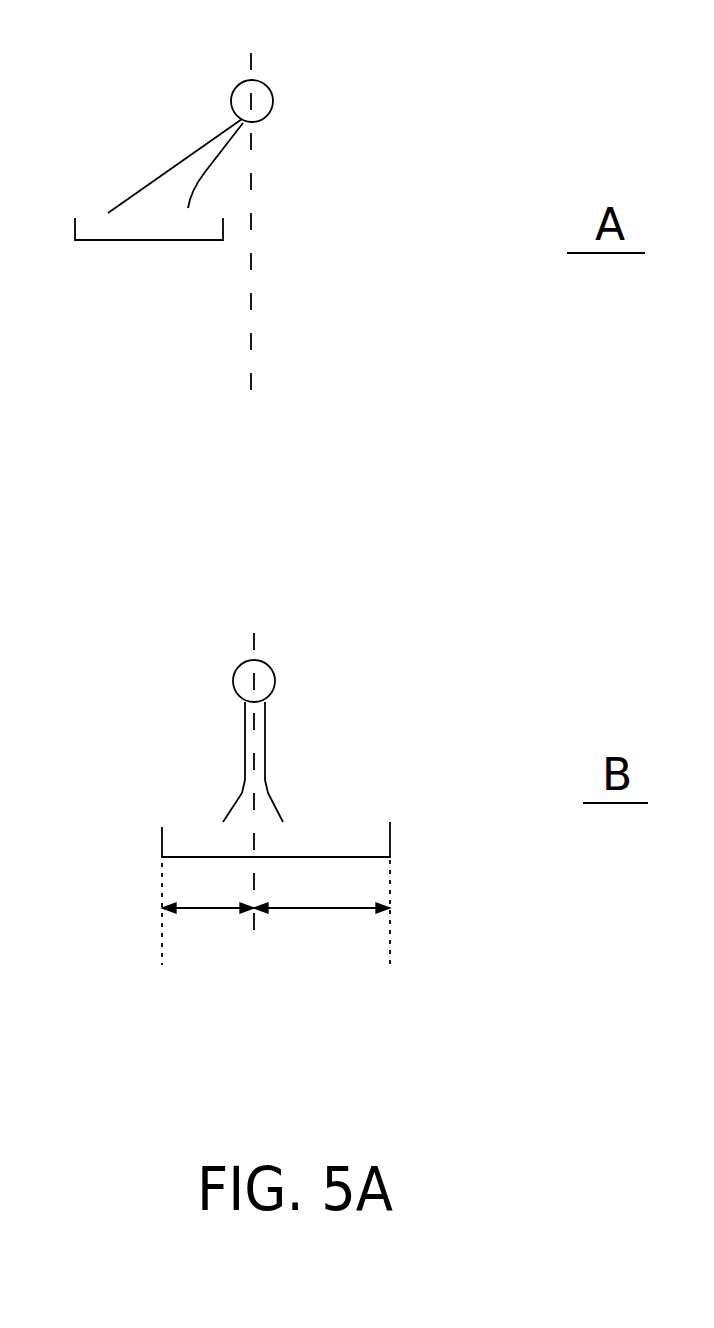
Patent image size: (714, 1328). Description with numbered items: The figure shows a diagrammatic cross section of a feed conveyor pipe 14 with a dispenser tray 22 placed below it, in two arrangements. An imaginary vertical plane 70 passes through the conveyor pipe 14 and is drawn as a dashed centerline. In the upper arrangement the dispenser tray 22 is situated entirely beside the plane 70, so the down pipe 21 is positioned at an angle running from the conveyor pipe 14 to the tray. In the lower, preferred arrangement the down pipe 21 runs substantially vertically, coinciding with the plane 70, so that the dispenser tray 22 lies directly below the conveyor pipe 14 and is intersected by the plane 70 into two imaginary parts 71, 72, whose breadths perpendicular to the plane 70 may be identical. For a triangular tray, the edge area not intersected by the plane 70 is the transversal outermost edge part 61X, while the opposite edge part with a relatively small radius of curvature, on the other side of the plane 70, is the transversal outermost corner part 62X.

The imaginary vertical plane 70 is at (251, 13).
The conveyor pipe 14 is at (272, 100).
The down pipe 21 is at (172, 167).
The dispenser tray 22 is at (145, 243).
The transversal outermost edge part 61X is at (395, 837).
The transversal outermost corner part 62X is at (162, 843).
The imaginary part 71 is at (322, 939).
The imaginary part 72 is at (208, 939).